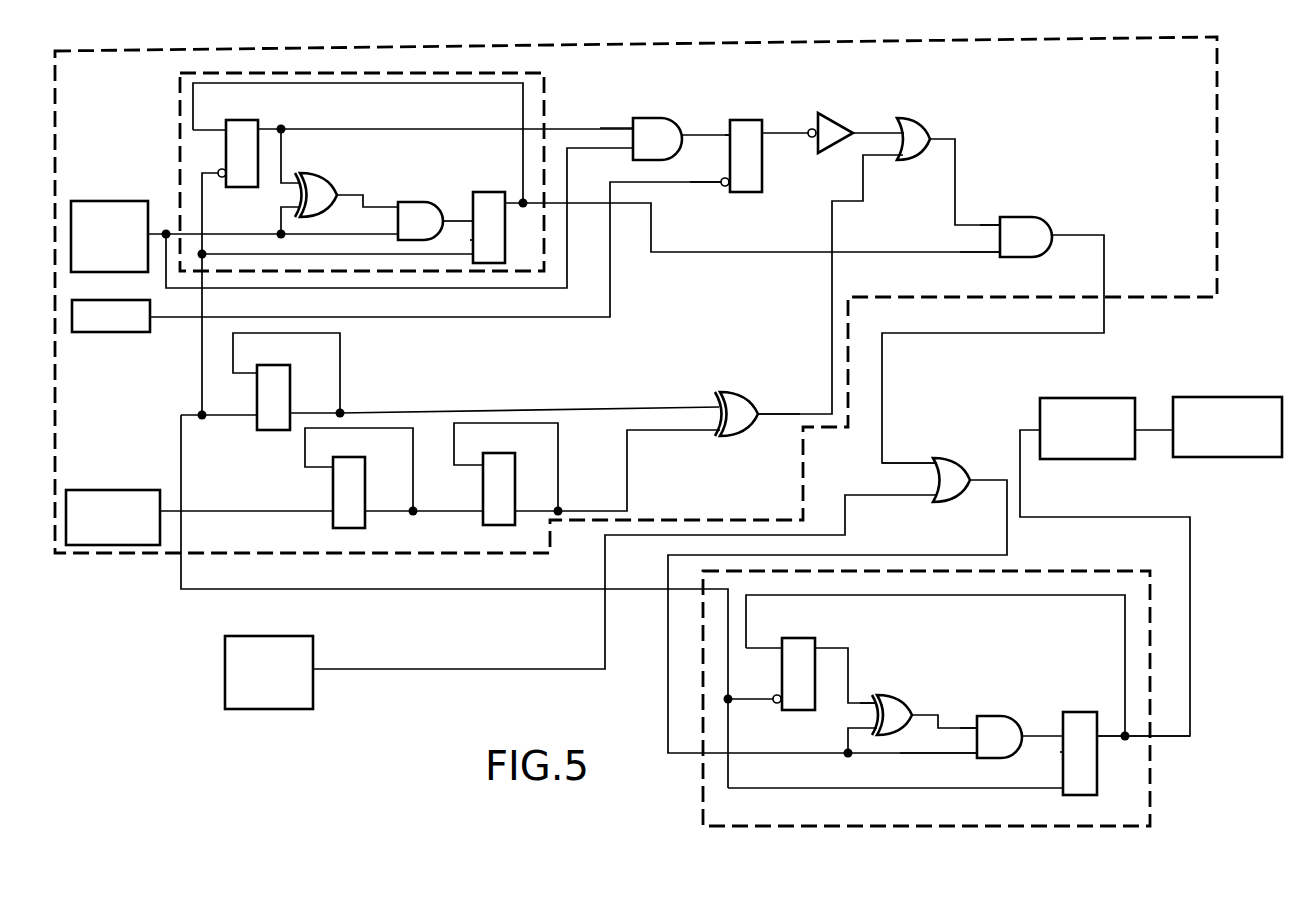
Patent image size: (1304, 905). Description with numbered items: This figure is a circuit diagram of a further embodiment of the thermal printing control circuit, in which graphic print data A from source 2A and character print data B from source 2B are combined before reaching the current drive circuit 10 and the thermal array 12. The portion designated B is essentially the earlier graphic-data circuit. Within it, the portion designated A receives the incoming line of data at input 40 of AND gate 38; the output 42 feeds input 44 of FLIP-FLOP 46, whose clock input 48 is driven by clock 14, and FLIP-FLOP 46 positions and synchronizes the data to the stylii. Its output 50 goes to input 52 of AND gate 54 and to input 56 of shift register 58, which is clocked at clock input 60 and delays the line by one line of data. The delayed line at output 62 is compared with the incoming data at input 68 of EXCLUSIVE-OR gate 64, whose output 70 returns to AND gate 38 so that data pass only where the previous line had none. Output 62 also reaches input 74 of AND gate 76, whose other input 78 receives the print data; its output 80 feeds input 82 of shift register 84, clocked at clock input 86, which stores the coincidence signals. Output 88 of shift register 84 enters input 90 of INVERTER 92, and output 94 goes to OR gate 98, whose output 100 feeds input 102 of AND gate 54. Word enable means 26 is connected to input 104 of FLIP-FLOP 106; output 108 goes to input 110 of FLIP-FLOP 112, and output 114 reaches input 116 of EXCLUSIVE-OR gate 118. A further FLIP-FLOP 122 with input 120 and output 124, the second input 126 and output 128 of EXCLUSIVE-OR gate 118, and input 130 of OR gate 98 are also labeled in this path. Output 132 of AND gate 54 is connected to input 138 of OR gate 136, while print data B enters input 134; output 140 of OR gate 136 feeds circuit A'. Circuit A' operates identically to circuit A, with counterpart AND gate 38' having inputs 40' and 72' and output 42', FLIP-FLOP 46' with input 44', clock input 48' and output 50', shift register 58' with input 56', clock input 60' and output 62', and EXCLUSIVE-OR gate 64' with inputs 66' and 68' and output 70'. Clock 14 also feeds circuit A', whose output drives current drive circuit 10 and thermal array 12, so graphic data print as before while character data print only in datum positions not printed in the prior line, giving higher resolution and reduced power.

The print data A source 2A is at (103, 201).
The print data B source 2B is at (270, 636).
The current drive circuit 10 is at (1080, 398).
The thermal array 12 is at (1213, 397).
The clock means 14 is at (130, 333).
The word enable means 26 is at (105, 490).
The AND gate 38 is at (420, 208).
The input of AND gate 40 is at (273, 226).
The output of AND gate 42 is at (458, 210).
The input of FLIP-FLOP 44 is at (460, 234).
The FLIP-FLOP 46 is at (486, 211).
The clock input of FLIP-FLOP 48 is at (336, 262).
The output of FLIP-FLOP 50 is at (748, 211).
The input of AND gate 52 is at (980, 240).
The AND gate 54 is at (1020, 217).
The input of shift register 56 is at (209, 119).
The shift register 58 is at (245, 138).
The clock input of shift register 60 is at (212, 282).
The output of shift register 62 is at (445, 146).
The EXCLUSIVE-OR gate 64 is at (325, 182).
The input of EXCLUSIVE-OR gate 68 is at (285, 210).
The output of EXCLUSIVE-OR gate 70 is at (367, 192).
The input of AND gate 74 is at (616, 115).
The AND gate 76 is at (655, 118).
The input of AND gate 78 is at (399, 208).
The output of AND gate 80 is at (706, 127).
The input of shift register 82 is at (713, 147).
The shift register 84 is at (743, 120).
The clock input of shift register 86 is at (702, 171).
The output of shift register 88 is at (785, 124).
The input of INVERTER 90 is at (796, 143).
The INVERTER 92 is at (830, 113).
The output of INVERTER 94 is at (878, 123).
The OR gate 98 is at (915, 118).
The output of OR gate 100 is at (965, 170).
The input of AND gate 102 is at (979, 214).
The input of FLIP-FLOP 104 is at (246, 501).
The FLIP-FLOP 106 is at (350, 457).
The output of FLIP-FLOP 108 is at (391, 503).
The input of FLIP-FLOP 110 is at (448, 501).
The FLIP-FLOP 112 is at (500, 453).
The output of FLIP-FLOP 114 is at (539, 503).
The input of EXCLUSIVE-OR gate 116 is at (639, 460).
The EXCLUSIVE-OR gate 118 is at (735, 393).
The flip-flop input 120 is at (454, 591).
The flip-flop 122 is at (271, 365).
The flip-flop output 124 is at (317, 406).
The exclusive OR gate input 126 is at (529, 398).
The exclusive OR gate output 128 is at (779, 404).
The OR gate input 130 is at (830, 273).
The output of AND gate 132 is at (993, 338).
The input of OR gate 134 is at (624, 570).
The OR gate 136 is at (947, 458).
The input of OR gate 138 is at (909, 454).
The output of OR gate 140 is at (838, 604).
The circuit portion A is at (341, 172).
The circuit portion B is at (1218, 128).
The circuit portion A' is at (927, 678).
The AND gate 38' is at (999, 720).
The AND gate input 40' is at (938, 743).
The AND gate output 42' is at (1042, 725).
The flip-flop input 44' is at (1047, 746).
The flip-flop 46' is at (1072, 736).
The flip-flop reset input 48' is at (895, 777).
The flip-flop output 50' is at (1143, 717).
The shift register input 56' is at (764, 636).
The shift register 58' is at (803, 655).
The shift register clock input 60' is at (753, 691).
The shift register output 62' is at (846, 663).
The exclusive OR gate 64' is at (900, 700).
The exclusive OR gate input 66' is at (865, 689).
The exclusive OR gate input 68' is at (858, 732).
The exclusive OR gate output 70' is at (944, 712).
The AND gate input 72' is at (961, 720).